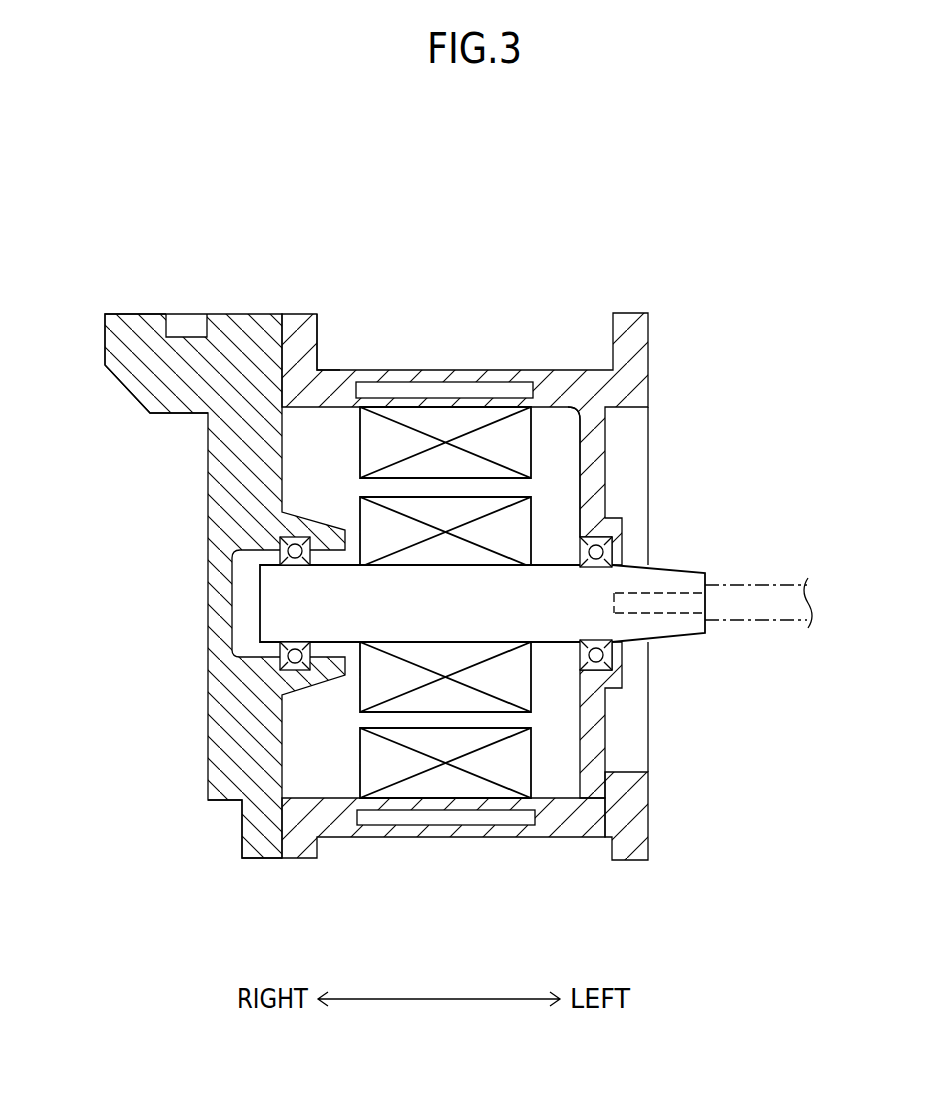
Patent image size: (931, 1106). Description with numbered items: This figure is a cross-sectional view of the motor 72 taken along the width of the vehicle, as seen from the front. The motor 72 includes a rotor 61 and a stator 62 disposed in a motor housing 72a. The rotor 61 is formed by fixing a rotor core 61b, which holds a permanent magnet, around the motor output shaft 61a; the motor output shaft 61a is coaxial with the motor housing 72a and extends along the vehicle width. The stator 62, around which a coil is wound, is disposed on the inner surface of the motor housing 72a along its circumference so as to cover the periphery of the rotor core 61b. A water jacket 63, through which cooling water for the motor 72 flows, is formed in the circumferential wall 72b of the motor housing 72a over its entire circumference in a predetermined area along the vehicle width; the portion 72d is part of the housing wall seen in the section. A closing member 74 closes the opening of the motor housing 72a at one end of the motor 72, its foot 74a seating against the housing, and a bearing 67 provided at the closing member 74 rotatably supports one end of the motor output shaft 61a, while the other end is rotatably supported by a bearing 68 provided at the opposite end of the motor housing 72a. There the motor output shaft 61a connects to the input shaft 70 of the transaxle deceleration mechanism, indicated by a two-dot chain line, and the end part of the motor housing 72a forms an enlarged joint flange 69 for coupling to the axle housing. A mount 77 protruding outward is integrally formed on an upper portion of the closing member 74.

The rotor 61 is at (496, 524).
The motor output shaft 61a is at (670, 568).
The rotor core 61b is at (548, 537).
The stator 62 is at (450, 425).
The water jacket 63 is at (508, 385).
The bearing 67 is at (282, 648).
The bearing 68 is at (612, 648).
The joint flange 69 is at (620, 810).
The input shaft 70 is at (775, 585).
The motor 72 is at (428, 352).
The motor housing 72a is at (420, 838).
The circumferential wall 72b is at (338, 385).
The housing inner wall 72d is at (597, 727).
The closing member 74 is at (218, 298).
The bracket foot 74a is at (262, 860).
The mount 77 is at (143, 375).